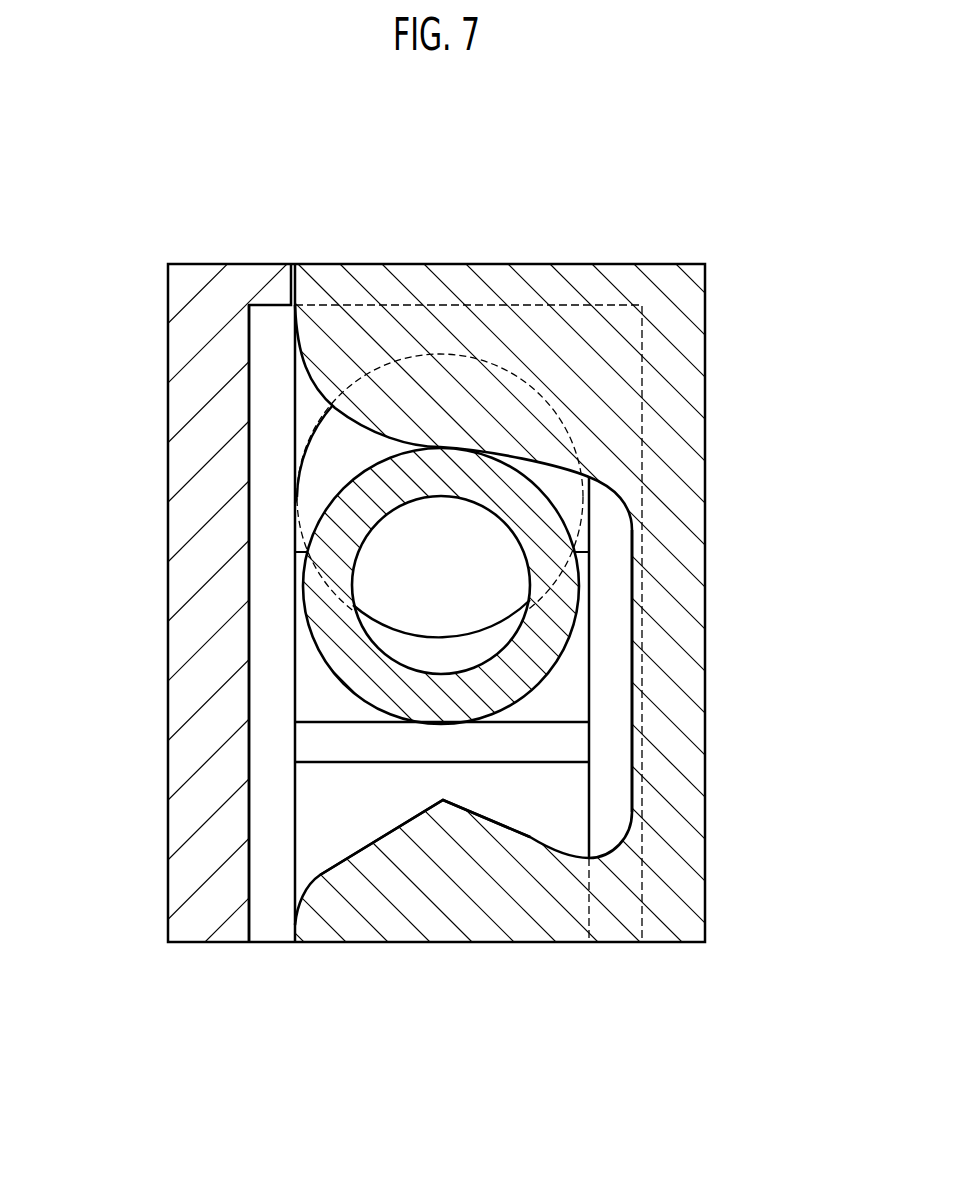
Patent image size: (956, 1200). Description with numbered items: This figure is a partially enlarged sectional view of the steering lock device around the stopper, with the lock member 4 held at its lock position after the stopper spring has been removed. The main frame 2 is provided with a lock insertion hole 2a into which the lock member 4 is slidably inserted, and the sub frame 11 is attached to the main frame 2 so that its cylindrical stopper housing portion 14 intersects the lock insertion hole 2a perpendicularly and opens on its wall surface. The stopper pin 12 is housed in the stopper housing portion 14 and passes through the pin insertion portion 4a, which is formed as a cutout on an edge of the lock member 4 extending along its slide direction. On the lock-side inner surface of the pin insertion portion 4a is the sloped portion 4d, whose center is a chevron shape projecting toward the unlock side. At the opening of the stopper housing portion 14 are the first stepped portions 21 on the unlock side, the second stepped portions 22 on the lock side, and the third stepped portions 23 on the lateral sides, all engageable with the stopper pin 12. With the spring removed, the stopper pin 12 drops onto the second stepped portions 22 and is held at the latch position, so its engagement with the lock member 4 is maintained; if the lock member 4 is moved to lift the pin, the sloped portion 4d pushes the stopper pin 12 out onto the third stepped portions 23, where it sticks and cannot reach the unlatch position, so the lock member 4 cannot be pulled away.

The main frame 2 is at (168, 885).
The lock insertion hole 2a is at (293, 287).
The lock member 4 is at (705, 877).
The pin insertion portion 4a is at (633, 756).
The sloped portion 4d is at (493, 822).
The sub frame 11 is at (397, 796).
The stopper pin 12 is at (332, 500).
The stopper housing portion 14 is at (314, 447).
The first stepped portions 21 is at (444, 353).
The second stepped portions 22 is at (323, 720).
The third stepped portions 23 is at (268, 639).